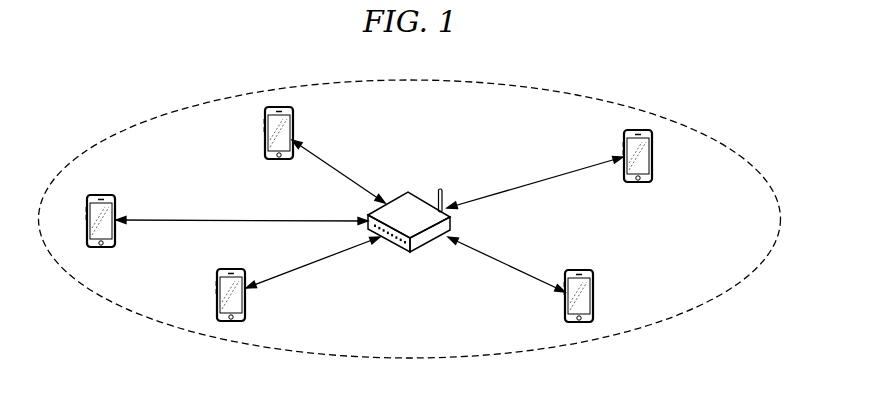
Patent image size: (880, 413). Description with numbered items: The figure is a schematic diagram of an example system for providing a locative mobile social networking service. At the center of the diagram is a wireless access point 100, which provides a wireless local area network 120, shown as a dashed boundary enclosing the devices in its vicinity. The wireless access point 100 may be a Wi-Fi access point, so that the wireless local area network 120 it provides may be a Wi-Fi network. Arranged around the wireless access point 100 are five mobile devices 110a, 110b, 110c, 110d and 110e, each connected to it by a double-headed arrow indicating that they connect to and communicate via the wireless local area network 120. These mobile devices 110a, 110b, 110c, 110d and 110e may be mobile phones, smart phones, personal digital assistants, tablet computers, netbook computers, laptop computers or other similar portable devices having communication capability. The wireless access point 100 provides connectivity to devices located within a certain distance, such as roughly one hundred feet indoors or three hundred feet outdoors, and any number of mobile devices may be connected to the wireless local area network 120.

The wireless access point 100 is at (408, 191).
The mobile device 110a is at (117, 205).
The mobile device 110b is at (294, 122).
The mobile device 110c is at (654, 152).
The mobile device 110d is at (596, 283).
The mobile device 110e is at (247, 305).
The wireless local area network 120 is at (484, 80).